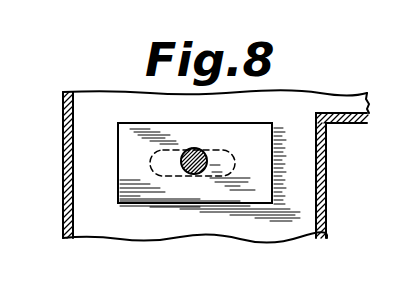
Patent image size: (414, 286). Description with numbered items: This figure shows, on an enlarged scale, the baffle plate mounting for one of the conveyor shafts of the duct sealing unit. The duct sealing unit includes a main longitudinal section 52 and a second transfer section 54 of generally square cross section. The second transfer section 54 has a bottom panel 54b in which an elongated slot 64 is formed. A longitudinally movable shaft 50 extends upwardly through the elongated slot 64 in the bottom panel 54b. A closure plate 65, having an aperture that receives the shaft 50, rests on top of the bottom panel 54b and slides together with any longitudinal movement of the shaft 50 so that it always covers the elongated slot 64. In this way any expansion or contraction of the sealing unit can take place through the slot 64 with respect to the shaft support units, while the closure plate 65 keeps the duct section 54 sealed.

The shaft 50 is at (201, 137).
The main longitudinal section 52 is at (345, 125).
The second transfer section 54 is at (63, 173).
The bottom panel 54b is at (133, 232).
The elongated slot 64 is at (186, 178).
The closure plate 65 is at (242, 127).